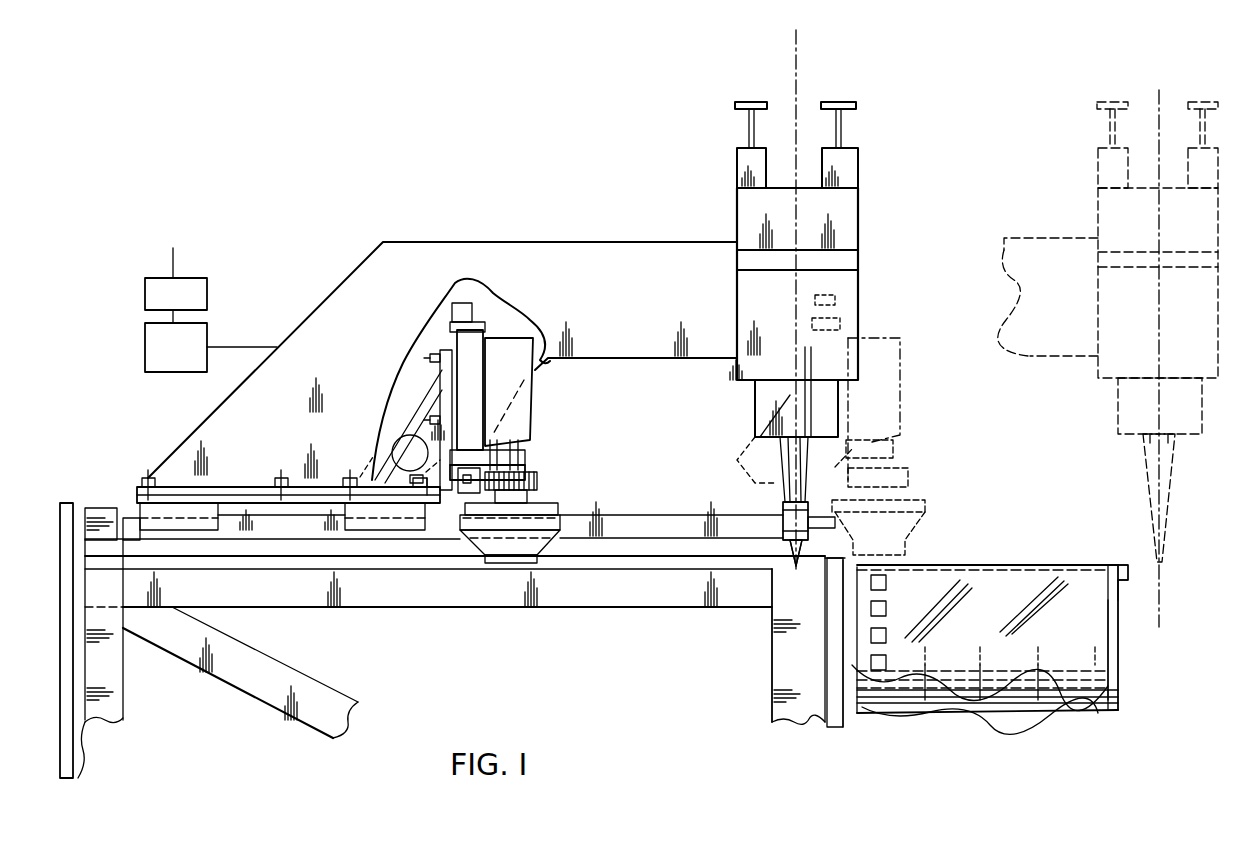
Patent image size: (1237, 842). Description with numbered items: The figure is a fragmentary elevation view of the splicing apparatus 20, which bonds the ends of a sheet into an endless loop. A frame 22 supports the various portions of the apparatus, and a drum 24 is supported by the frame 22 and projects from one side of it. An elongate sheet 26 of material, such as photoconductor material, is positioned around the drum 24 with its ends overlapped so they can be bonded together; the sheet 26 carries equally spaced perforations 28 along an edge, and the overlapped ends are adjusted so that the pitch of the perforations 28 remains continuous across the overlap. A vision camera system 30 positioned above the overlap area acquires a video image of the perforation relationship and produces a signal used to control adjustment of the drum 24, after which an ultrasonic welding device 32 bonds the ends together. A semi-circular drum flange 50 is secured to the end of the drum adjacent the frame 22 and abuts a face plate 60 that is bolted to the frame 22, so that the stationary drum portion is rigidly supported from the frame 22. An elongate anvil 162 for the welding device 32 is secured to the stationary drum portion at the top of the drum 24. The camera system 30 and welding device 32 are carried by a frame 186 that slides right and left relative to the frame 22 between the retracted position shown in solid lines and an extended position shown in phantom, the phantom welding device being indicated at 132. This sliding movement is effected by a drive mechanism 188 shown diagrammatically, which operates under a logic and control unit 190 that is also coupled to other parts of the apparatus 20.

The apparatus 20 is at (505, 207).
The frame 22 is at (782, 657).
The drum 24 is at (1106, 719).
The sheet 26 is at (1100, 640).
The perforations 28 is at (887, 583).
The vision camera system 30 is at (560, 488).
The ultrasonic welding device 32 is at (755, 503).
The drum flange 50 is at (847, 665).
The face plate 60 is at (833, 675).
The ultrasonic welding device in extended position 132 is at (1165, 526).
The anvil 162 is at (1118, 564).
The frame 186 is at (374, 331).
The drive mechanism 188 is at (145, 348).
The logic and control unit 190 is at (145, 298).